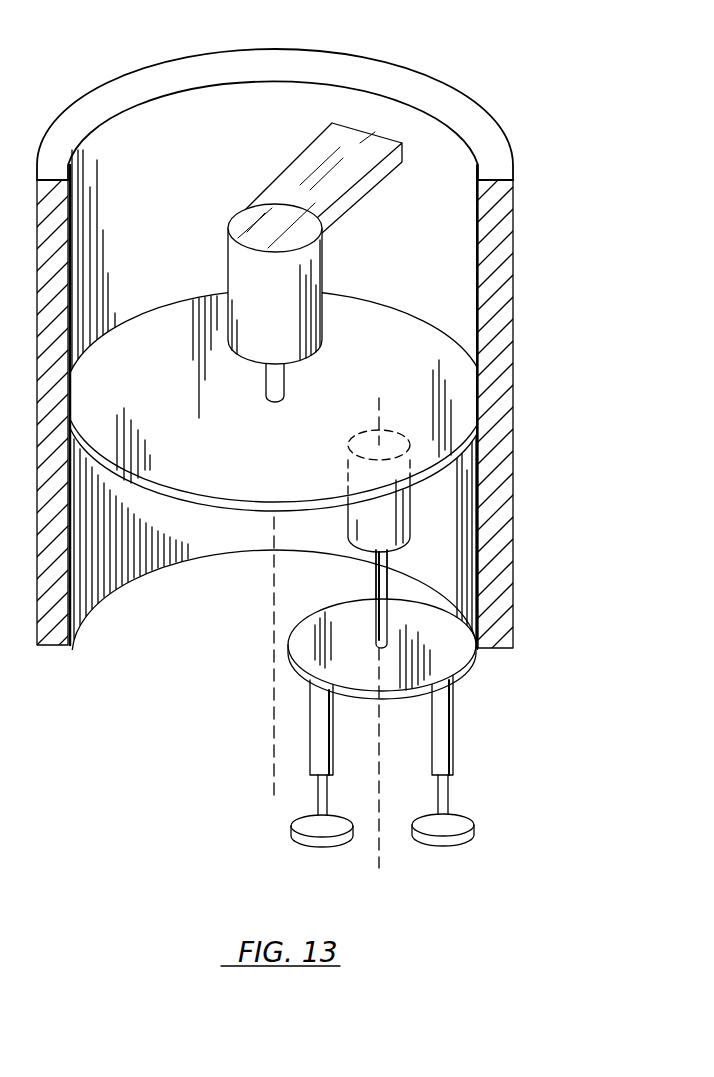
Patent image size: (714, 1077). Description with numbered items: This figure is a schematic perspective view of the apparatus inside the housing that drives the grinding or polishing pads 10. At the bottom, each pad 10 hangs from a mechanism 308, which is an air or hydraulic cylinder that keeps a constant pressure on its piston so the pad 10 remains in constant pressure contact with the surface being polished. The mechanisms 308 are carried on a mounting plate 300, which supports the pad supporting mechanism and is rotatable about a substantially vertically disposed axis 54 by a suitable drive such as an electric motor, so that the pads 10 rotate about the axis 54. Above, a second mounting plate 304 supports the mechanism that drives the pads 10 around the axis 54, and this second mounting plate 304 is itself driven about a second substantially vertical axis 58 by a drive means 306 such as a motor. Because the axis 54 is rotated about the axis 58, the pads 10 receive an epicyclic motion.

The second substantially vertical axis 58 is at (274, 88).
The second mounting plate 304 is at (165, 340).
The drive means 306 is at (330, 265).
The mounting plate 300 is at (342, 612).
The mechanism 308 is at (304, 747).
The pads 10 is at (293, 823).
The substantially vertically disposed axis 54 is at (378, 420).